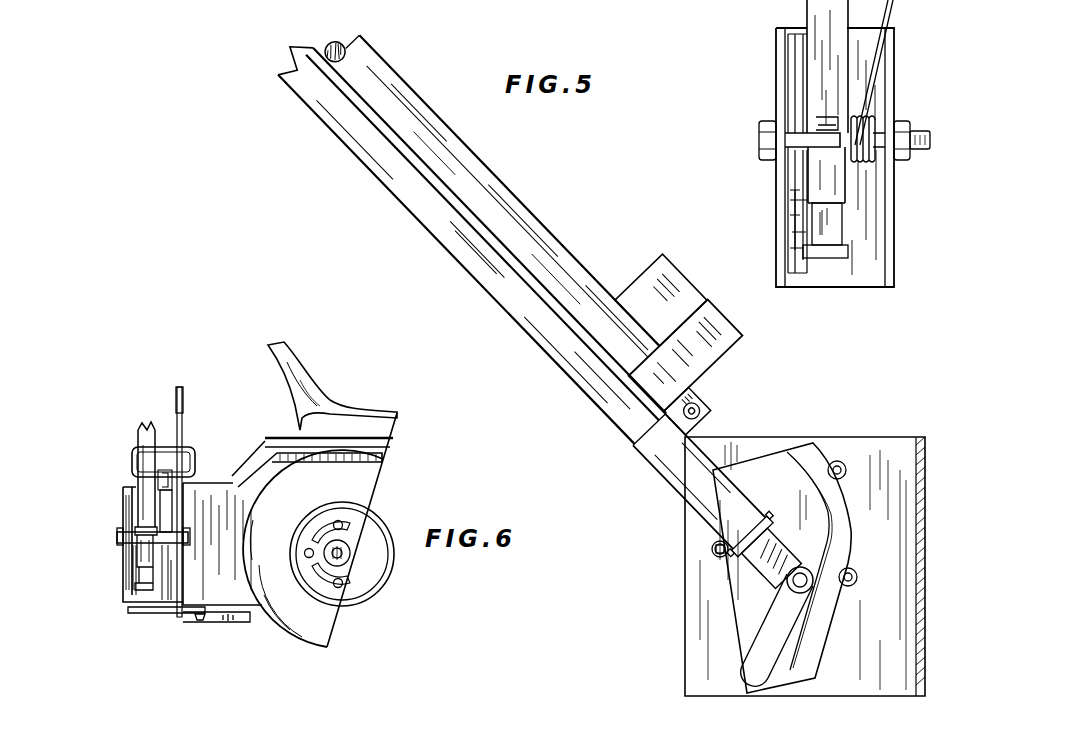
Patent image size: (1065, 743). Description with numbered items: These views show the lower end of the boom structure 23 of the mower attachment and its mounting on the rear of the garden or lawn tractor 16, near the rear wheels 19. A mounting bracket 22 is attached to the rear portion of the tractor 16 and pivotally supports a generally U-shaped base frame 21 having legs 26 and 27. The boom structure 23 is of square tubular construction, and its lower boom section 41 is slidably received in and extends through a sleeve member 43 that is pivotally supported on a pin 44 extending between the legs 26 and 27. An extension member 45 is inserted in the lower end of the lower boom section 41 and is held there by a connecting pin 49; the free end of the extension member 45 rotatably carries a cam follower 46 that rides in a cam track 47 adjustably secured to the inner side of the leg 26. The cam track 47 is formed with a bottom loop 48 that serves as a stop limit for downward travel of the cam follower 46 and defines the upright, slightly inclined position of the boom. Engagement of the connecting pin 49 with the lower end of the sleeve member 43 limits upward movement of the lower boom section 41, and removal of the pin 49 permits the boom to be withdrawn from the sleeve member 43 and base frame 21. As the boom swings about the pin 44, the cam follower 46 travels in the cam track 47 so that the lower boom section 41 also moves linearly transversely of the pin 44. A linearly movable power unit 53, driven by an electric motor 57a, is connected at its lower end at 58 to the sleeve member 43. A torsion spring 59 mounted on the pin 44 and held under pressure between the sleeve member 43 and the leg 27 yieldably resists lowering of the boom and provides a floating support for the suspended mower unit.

In FIG. 6, the tractor 16 is at (258, 352).
In FIG. 6, the rear wheels 19 is at (293, 630).
In FIG. 4, the base frame 21 is at (855, 272).
In FIG. 6, the base frame 21 is at (150, 415).
In FIG. 6, the mounting bracket 22 is at (202, 490).
In FIG. 5, the boom structure 23 is at (412, 257).
In FIG. 4, the leg 26 is at (778, 177).
In FIG. 4, the leg 27 is at (890, 262).
In FIG. 5, the lower boom section 41 is at (467, 241).
In FIG. 6, the sleeve member 43 is at (142, 483).
In FIG. 5, the pin 44 is at (712, 548).
In FIG. 4, the pin 44 is at (917, 142).
In FIG. 6, the pin 44 is at (128, 530).
In FIG. 5, the extension member 45 is at (771, 558).
In FIG. 4, the extension member 45 is at (848, 226).
In FIG. 5, the cam follower 46 is at (812, 588).
In FIG. 4, the cam follower 46 is at (803, 247).
In FIG. 6, the cam follower 46 is at (132, 588).
In FIG. 5, the cam track 47 is at (828, 525).
In FIG. 5, the bottom loop 48 is at (752, 672).
In FIG. 5, the connecting pin 49 is at (702, 484).
In FIG. 5, the power unit 53 is at (504, 216).
In FIG. 5, the electric motor 57a is at (663, 332).
In FIG. 5, the connection 58 is at (686, 411).
In FIG. 4, the torsion spring 59 is at (852, 127).
In FIG. 6, the torsion spring 59 is at (155, 548).